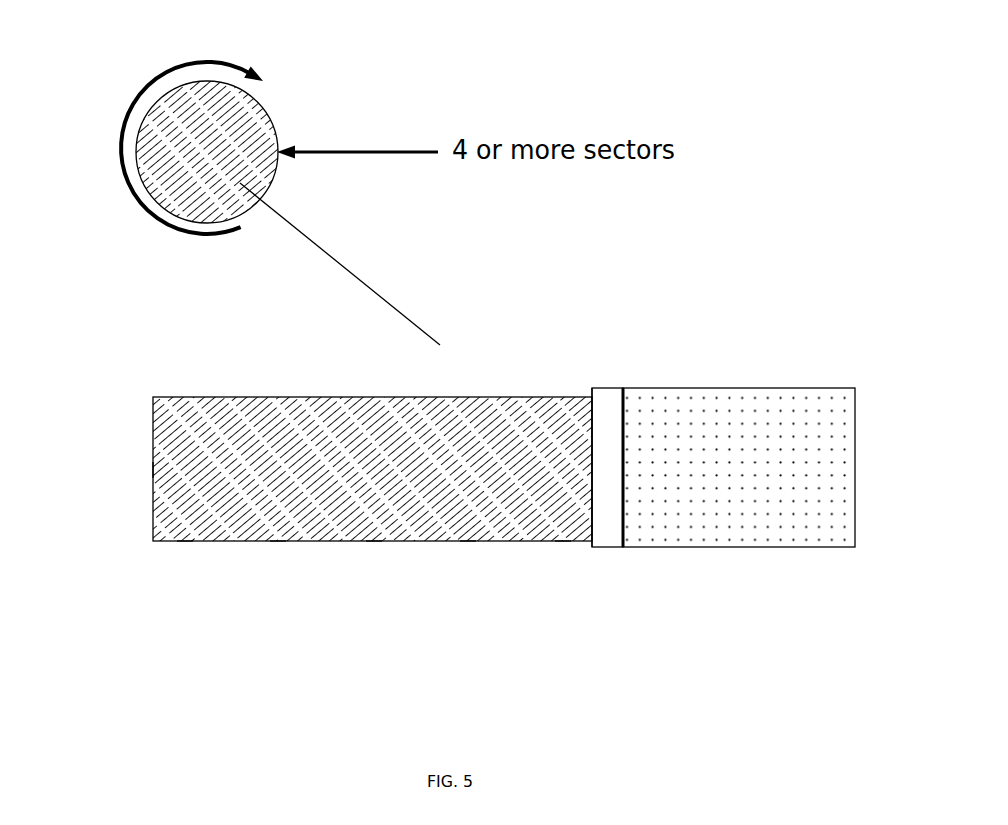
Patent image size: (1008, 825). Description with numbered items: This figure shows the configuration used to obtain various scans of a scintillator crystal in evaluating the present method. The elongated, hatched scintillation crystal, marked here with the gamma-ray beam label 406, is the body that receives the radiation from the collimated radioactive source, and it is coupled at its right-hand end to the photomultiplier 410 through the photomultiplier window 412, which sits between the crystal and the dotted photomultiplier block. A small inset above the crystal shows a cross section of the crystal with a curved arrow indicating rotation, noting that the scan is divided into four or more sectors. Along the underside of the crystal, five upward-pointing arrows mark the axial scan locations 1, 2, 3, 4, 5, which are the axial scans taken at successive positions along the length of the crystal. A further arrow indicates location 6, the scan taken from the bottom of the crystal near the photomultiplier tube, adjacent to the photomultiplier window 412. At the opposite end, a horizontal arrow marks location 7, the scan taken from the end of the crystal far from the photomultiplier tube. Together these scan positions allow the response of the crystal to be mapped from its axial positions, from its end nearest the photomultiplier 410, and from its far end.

The axial scan location 1 is at (185, 556).
The axial scan location 2 is at (278, 556).
The axial scan location 3 is at (374, 556).
The axial scan location 4 is at (468, 556).
The axial scan location 5 is at (563, 556).
The bottom scan location 6 is at (605, 506).
The end scan location 7 is at (140, 470).
The gamma-ray beam 406 is at (397, 413).
The photomultiplier 410 is at (743, 423).
The photomultiplier window 412 is at (607, 397).